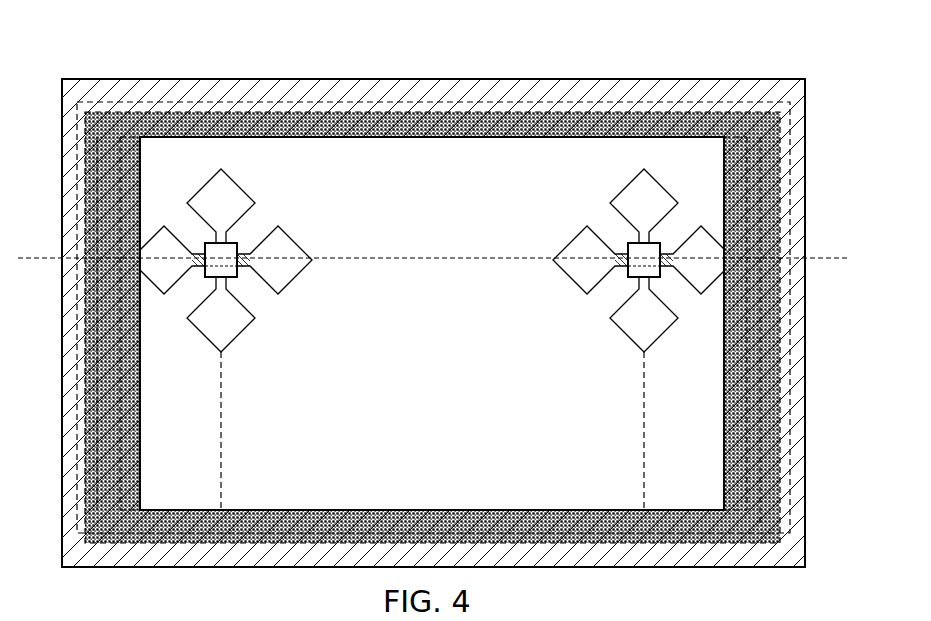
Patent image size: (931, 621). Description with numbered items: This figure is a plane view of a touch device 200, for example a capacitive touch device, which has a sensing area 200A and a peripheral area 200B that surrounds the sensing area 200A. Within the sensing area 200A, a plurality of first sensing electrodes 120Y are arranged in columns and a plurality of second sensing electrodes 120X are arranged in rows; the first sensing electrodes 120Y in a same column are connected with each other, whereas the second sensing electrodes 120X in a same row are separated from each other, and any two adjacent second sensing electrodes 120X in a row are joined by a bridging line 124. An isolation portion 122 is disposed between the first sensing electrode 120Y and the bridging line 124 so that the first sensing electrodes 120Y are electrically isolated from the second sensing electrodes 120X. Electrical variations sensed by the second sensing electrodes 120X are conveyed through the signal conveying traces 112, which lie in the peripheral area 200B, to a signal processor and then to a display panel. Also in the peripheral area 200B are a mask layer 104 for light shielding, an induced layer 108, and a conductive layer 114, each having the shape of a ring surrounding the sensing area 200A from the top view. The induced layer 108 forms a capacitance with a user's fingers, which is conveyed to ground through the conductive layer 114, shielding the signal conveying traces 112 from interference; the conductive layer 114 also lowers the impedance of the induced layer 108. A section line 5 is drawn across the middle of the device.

The touch device 200 is at (824, 62).
The sensing area 200A is at (372, 136).
The peripheral area 200B is at (477, 79).
The mask layer 104 is at (805, 90).
The induced layer 108 is at (791, 160).
The conductive layer 114 is at (781, 322).
The signal conveying traces 112 is at (770, 397).
The second sensing electrodes 120X is at (156, 244).
The first sensing electrodes 120Y is at (222, 186).
The isolation portion 122 is at (240, 248).
The bridging line 124 is at (242, 272).
The section line 5-5' 5 is at (27, 258).